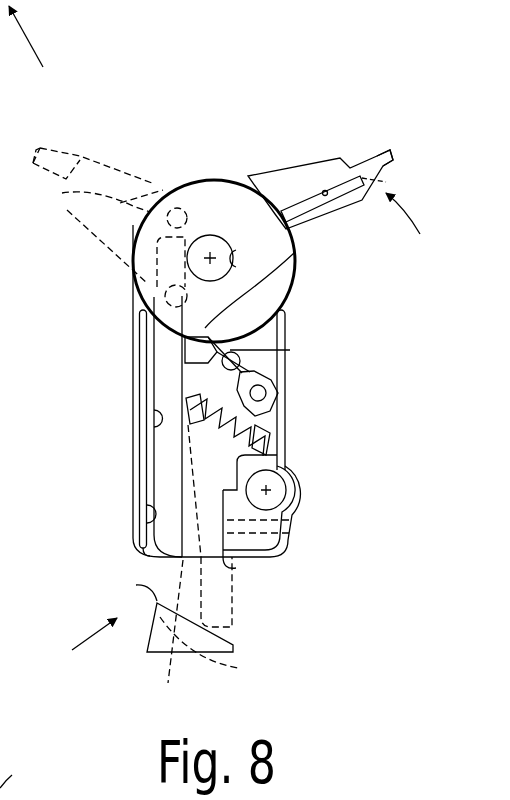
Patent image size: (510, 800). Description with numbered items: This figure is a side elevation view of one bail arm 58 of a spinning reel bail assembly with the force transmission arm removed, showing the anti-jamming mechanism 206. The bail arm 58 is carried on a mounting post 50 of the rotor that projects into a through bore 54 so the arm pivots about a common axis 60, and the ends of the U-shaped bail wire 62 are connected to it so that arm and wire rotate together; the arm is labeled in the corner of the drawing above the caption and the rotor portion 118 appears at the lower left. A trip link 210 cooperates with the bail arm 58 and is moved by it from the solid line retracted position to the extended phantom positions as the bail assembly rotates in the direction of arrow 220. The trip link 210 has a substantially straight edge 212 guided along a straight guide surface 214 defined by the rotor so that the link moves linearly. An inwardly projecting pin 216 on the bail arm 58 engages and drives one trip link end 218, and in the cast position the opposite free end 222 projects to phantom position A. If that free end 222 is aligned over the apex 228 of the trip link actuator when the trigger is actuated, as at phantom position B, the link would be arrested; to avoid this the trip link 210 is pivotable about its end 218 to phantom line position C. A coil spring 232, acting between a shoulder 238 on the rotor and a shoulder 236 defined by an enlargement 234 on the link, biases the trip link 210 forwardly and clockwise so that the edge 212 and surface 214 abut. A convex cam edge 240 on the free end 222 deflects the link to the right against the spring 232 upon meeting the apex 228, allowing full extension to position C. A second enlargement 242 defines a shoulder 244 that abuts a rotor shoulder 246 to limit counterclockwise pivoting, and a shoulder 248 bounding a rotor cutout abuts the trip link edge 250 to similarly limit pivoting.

The mounting post 50 is at (221, 247).
The through bore 54 is at (237, 258).
The bail arm 58 is at (320, 167).
The common axis 60 is at (208, 256).
The bail wire 62 is at (372, 156).
The chassis 118 is at (28, 768).
The mechanism 206 is at (73, 653).
The trip link 210 is at (172, 446).
The straight edge 212 is at (154, 384).
The straight guide surface 214 is at (152, 418).
The pin 216 is at (164, 188).
The trip link end 218 is at (77, 198).
The arrow 220 is at (230, 148).
The free end 222 is at (168, 578).
The apex 228 is at (157, 604).
The coil spring 232 is at (273, 424).
The enlargement 234 is at (150, 456).
The shoulder 236 is at (264, 374).
The shoulder 238 is at (291, 466).
The convex cam edge 240 is at (150, 560).
The second enlargement 242 is at (184, 350).
The shoulder 244 is at (293, 292).
The shoulder 246 is at (252, 348).
The shoulder 248 is at (236, 568).
The trip link edge 250 is at (283, 517).
The phantom position A is at (172, 640).
The phantom position B is at (210, 654).
The phantom line position C is at (290, 533).